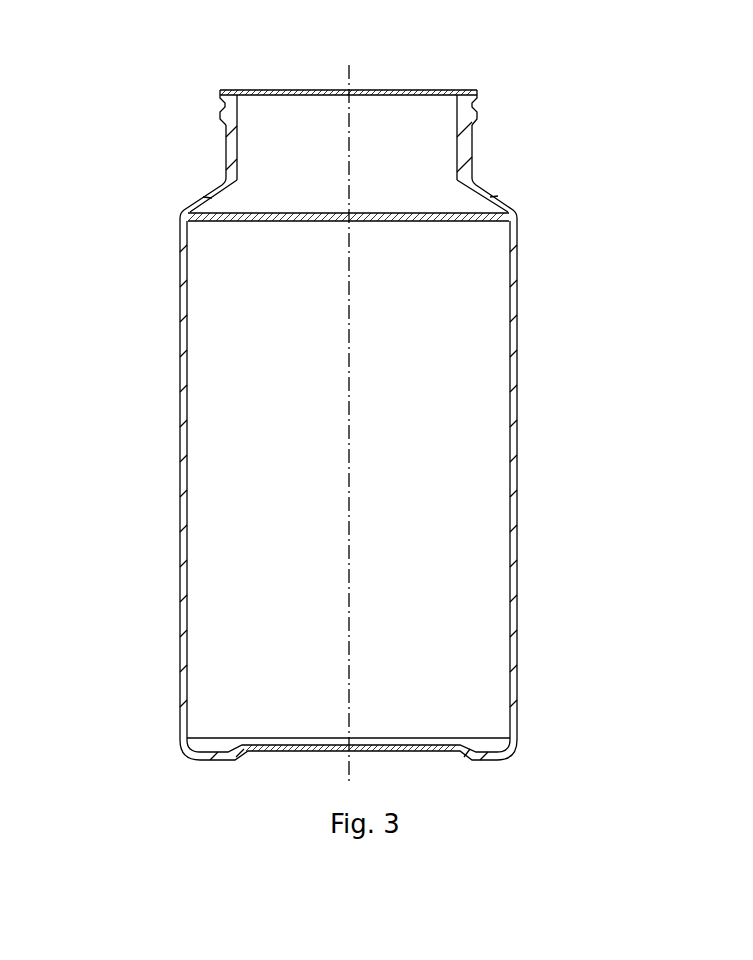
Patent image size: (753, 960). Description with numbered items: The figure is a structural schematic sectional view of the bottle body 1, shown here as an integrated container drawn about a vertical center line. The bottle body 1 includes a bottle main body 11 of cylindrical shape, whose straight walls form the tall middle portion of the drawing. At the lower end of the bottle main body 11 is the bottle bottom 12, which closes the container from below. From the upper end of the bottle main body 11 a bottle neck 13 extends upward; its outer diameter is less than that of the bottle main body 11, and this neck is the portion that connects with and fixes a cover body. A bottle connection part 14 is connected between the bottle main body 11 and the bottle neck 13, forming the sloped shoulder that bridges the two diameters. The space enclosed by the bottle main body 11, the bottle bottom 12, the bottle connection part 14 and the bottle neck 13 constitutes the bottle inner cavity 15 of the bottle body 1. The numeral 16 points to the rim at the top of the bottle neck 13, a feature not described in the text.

The bottle body 1 is at (150, 112).
The bottle main body 11 is at (517, 435).
The bottle bottom 12 is at (433, 748).
The bottle neck 13 is at (463, 143).
The bottle connection part 14 is at (495, 193).
The bottle inner cavity 15 is at (450, 598).
The rim flange 16 is at (475, 100).